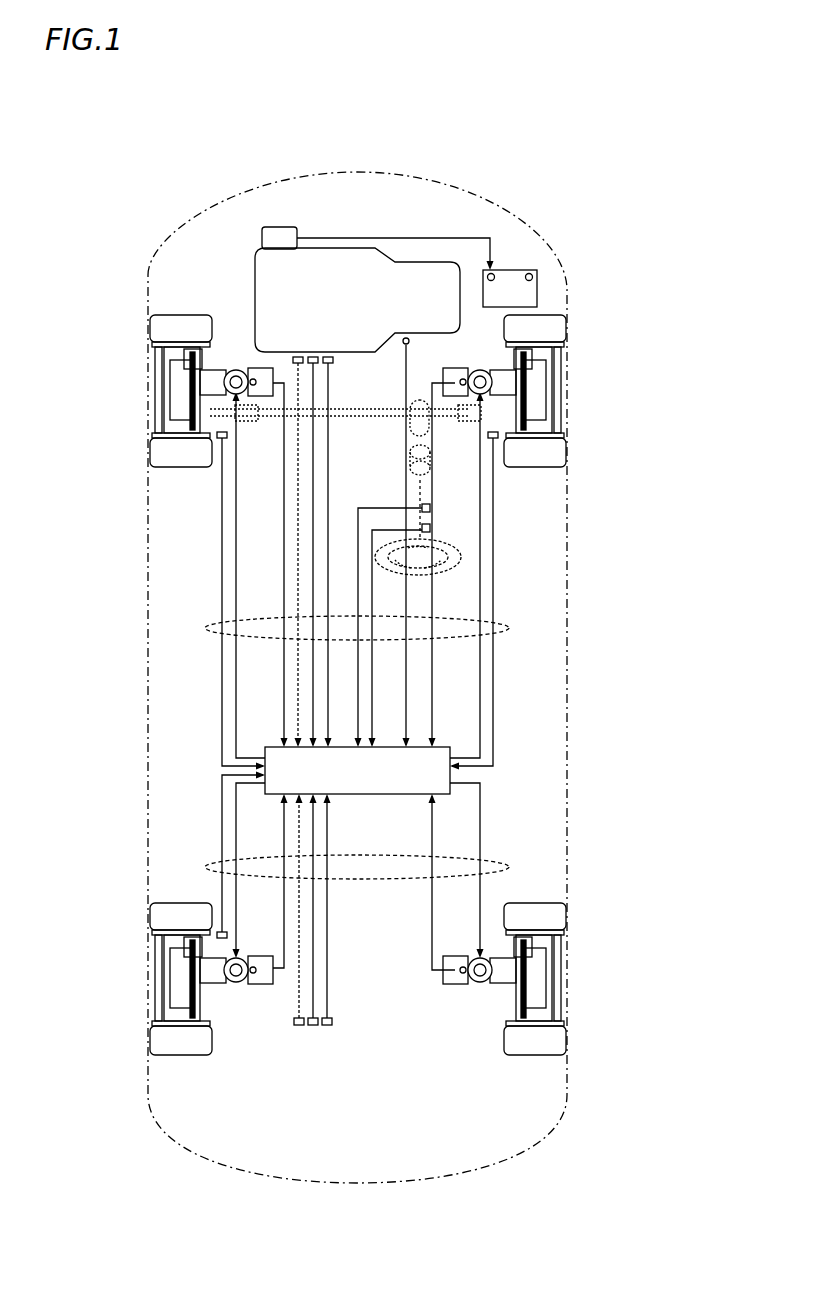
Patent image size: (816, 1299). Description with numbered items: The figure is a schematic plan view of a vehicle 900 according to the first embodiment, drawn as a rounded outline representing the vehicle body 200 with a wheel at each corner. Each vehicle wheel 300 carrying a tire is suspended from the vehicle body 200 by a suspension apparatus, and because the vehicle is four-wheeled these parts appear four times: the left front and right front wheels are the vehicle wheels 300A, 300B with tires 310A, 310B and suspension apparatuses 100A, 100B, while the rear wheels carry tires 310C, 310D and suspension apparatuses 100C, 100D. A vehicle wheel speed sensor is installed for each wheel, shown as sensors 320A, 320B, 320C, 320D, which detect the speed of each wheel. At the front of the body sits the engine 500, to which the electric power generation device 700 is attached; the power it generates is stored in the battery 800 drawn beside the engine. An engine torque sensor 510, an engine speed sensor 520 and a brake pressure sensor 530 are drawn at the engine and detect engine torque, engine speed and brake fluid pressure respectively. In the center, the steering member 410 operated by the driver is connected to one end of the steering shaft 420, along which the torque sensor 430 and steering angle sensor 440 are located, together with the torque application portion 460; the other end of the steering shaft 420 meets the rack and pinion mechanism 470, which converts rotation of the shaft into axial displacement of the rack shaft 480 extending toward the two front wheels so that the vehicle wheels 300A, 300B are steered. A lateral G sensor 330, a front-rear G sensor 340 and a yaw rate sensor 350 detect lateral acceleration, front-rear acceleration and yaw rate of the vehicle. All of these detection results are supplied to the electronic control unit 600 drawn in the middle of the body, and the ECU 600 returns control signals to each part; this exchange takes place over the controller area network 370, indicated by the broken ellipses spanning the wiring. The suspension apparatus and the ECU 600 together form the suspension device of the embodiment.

The vehicle 900 is at (541, 130).
The vehicle body 200 is at (553, 245).
The electric power generation device 700 is at (292, 227).
The engine 500 is at (255, 300).
The battery 800 is at (532, 292).
The engine torque sensor 510 is at (300, 355).
The engine speed sensor 520 is at (314, 355).
The brake pressure sensor 530 is at (329, 355).
The electronic control unit (ECU) 600 is at (350, 796).
The rack shaft 480 is at (348, 406).
The rack and pinion mechanism 470 is at (410, 428).
The torque application portion 460 is at (430, 455).
The steering angle sensor 440 is at (431, 508).
The torque sensor 430 is at (431, 528).
The steering shaft 420 is at (462, 543).
The steering member 410 is at (470, 568).
The controller area network (CAN) 370 is at (505, 866).
The yaw rate sensor 350 is at (301, 1028).
The front-rear G sensor 340 is at (314, 1028).
The lateral G sensor 330 is at (328, 1028).
The vehicle wheel 300A is at (152, 352).
The vehicle wheel 300B is at (565, 352).
The vehicle wheel 300 is at (156, 940).
The tire 310A is at (165, 455).
The tire 310B is at (552, 455).
The tire 310C is at (163, 1043).
The tire 310D is at (553, 1043).
The vehicle wheel speed sensor 320A is at (210, 440).
The vehicle wheel speed sensor 320B is at (507, 440).
The vehicle wheel speed sensor 320C is at (178, 923).
The vehicle wheel speed sensor 320D is at (538, 923).
The suspension apparatus 100A is at (208, 416).
The suspension apparatus 100B is at (509, 416).
The suspension apparatus 100C is at (208, 1001).
The suspension apparatus 100D is at (509, 1001).